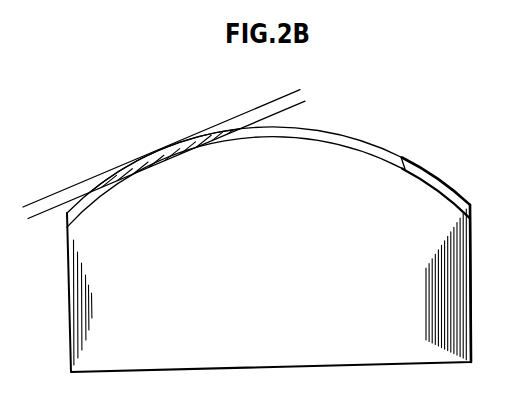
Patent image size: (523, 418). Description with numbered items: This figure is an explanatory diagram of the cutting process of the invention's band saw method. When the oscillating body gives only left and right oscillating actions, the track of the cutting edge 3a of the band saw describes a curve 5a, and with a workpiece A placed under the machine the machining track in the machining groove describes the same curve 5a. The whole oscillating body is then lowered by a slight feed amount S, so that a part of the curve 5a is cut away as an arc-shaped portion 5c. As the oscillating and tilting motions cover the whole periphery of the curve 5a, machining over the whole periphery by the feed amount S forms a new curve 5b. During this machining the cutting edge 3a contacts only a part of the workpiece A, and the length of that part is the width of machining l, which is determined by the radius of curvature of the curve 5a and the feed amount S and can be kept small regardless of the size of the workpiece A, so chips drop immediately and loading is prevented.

The workpiece A is at (199, 357).
The cutting edge 3a is at (242, 113).
The curve 5a is at (342, 135).
The new curve 5b is at (405, 160).
The arc-shaped portion 5c is at (173, 145).
The feed amount S is at (156, 125).
The width of machining l is at (90, 192).